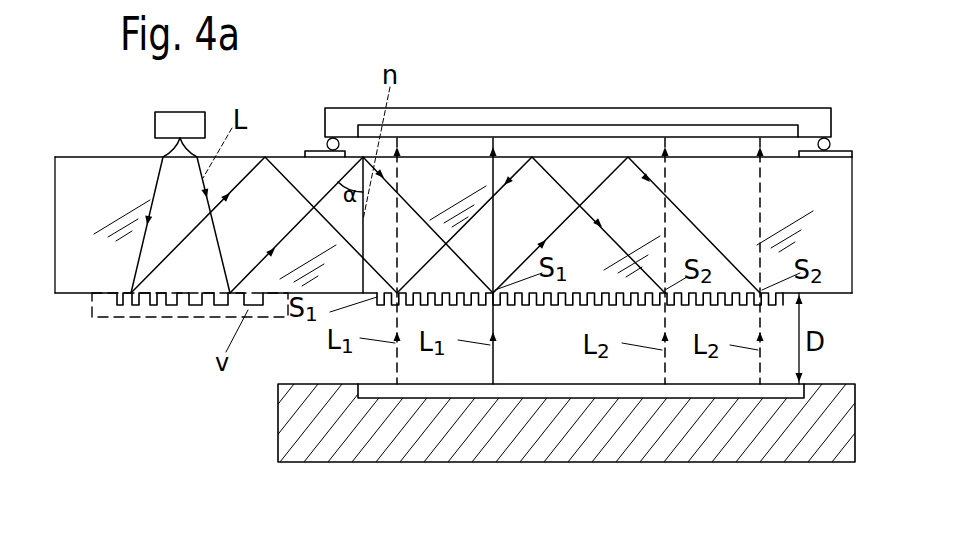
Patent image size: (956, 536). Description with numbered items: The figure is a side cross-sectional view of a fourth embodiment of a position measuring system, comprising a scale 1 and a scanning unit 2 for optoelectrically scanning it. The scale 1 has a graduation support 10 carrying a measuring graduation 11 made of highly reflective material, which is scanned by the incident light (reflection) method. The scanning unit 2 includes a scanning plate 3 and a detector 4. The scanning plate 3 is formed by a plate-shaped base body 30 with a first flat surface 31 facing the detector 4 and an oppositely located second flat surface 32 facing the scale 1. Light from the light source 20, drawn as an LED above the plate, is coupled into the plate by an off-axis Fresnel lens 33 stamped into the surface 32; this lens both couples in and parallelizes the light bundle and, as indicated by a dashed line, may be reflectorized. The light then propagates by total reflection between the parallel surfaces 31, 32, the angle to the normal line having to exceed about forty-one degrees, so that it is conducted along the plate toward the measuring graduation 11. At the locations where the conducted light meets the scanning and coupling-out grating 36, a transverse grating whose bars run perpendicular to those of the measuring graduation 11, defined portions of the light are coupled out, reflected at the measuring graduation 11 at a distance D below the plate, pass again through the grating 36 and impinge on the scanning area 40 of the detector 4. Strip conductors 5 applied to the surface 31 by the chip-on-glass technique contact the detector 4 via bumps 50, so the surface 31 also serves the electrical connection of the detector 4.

The scale 1 is at (557, 458).
The scanning unit 2 is at (597, 95).
The scanning plate 3 is at (852, 217).
The detector 4 is at (532, 105).
The strip conductors 5 is at (843, 153).
The graduation support 10 is at (588, 428).
The measuring graduation 11 is at (775, 393).
The LED light source 20 is at (153, 115).
The base body 30 is at (70, 207).
The first flat surface 31 is at (97, 155).
The second flat surface 32 is at (73, 294).
The off-axis Fresnel lens 33 is at (165, 303).
The scanning and coupling-out grating 36 is at (548, 308).
The scanning area 40 is at (578, 128).
The bumps 50 is at (832, 138).